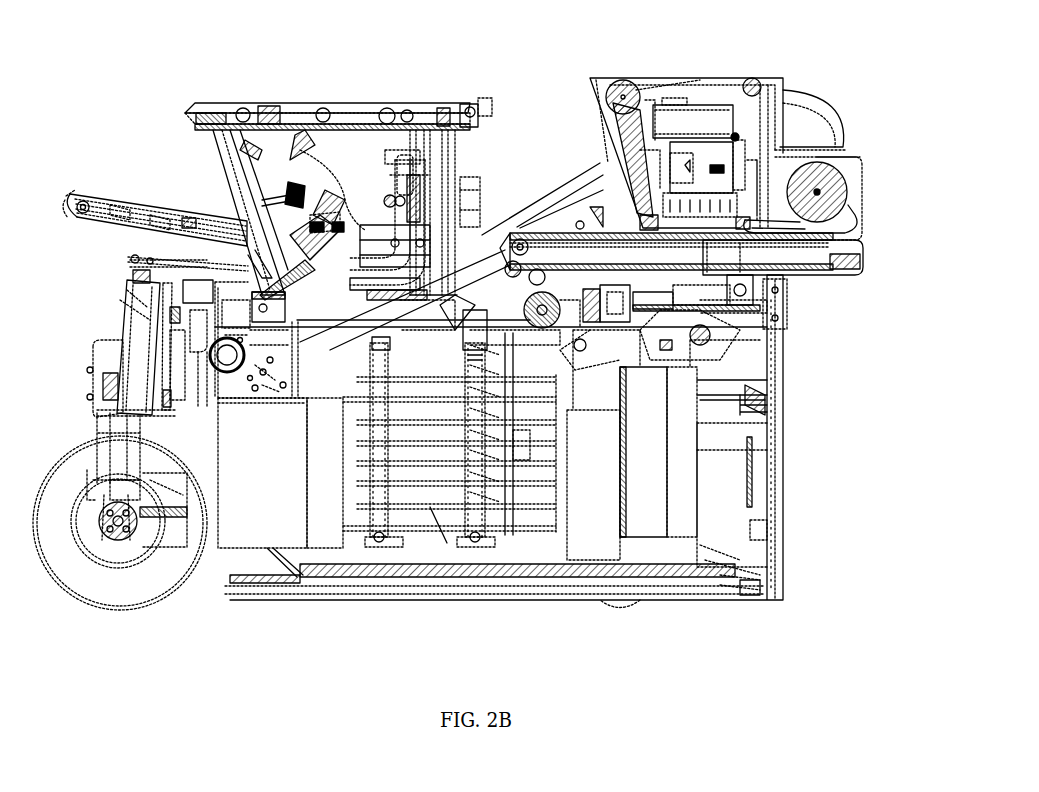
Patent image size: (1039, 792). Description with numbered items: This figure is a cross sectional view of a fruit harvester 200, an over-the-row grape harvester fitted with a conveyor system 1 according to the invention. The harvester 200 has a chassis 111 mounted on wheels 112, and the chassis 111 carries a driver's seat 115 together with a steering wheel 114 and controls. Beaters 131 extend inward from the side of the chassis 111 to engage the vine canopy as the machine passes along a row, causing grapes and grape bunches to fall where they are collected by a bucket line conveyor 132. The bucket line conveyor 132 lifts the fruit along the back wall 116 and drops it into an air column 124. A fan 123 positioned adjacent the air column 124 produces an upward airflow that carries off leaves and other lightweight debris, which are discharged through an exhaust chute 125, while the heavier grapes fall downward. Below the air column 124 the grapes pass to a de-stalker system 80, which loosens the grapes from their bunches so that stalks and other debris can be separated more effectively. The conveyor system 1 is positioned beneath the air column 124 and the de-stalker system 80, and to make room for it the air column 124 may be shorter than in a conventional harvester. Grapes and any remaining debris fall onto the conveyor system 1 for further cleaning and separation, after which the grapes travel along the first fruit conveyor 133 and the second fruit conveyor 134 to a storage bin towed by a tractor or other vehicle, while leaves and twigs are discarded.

The harvester 200 is at (173, 68).
The steering wheel 114 is at (313, 200).
The driver's seat 115 is at (373, 222).
The second fruit conveyor 134 is at (182, 200).
The fan 123 is at (690, 120).
The air column 124 is at (713, 153).
The exhaust chute 125 is at (798, 123).
The de-stalker system 80 is at (850, 187).
The conveyor system 1 is at (813, 249).
The first fruit conveyor 133 is at (753, 295).
The chassis 111 is at (768, 410).
The back wall 116 is at (782, 473).
The bucket line conveyor 132 is at (768, 527).
The wheel 112 is at (177, 558).
The beater 131 is at (430, 507).